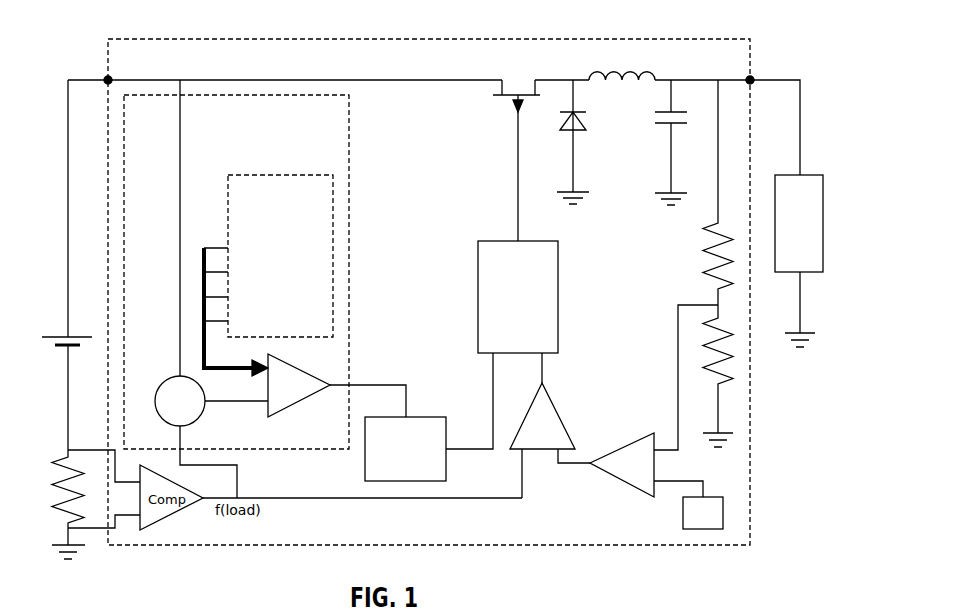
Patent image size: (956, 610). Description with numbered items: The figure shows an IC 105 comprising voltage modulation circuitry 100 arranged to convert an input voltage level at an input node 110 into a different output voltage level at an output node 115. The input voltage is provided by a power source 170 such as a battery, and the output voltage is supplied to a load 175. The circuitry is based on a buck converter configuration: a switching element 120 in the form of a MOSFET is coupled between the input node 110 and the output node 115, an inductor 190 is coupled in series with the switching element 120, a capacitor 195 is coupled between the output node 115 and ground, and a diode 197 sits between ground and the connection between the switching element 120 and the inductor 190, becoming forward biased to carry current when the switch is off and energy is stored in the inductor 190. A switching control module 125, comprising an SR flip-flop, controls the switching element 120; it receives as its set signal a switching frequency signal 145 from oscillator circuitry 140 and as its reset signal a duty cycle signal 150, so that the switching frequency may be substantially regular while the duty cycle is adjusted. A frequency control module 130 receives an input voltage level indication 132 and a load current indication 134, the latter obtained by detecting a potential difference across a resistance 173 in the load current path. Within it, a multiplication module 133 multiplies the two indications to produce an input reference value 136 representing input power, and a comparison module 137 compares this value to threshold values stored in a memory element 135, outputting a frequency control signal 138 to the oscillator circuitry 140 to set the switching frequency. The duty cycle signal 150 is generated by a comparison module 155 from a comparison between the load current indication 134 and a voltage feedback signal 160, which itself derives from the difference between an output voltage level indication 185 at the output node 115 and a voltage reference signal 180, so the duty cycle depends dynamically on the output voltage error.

The voltage modulation circuitry 100 is at (785, 515).
The IC 105 is at (751, 415).
The input node 110 is at (107, 80).
The output node 115 is at (751, 79).
The switching element 120 is at (502, 96).
The switching control module 125 is at (480, 240).
The frequency control module 130 is at (349, 140).
The input voltage level indication 132 is at (181, 172).
The multiplication module 133 is at (164, 383).
The load current indication 134 is at (238, 480).
The memory element 135 is at (333, 205).
The input reference value 136 is at (240, 404).
The comparison module 137 is at (312, 377).
The frequency control signal 138 is at (362, 384).
The oscillator circuitry 140 is at (428, 417).
The switching frequency signal 145 is at (460, 450).
The duty cycle signal 150 is at (544, 377).
The comparison module 155 is at (556, 410).
The voltage feedback signal 160 is at (567, 468).
The power source 170 is at (52, 334).
The resistance 173 is at (62, 455).
The load 175 is at (808, 175).
The voltage reference signal 180 is at (683, 514).
The output voltage level indication 185 is at (678, 335).
The inductor 190 is at (655, 76).
The capacitor 195 is at (659, 124).
The diode 197 is at (566, 130).